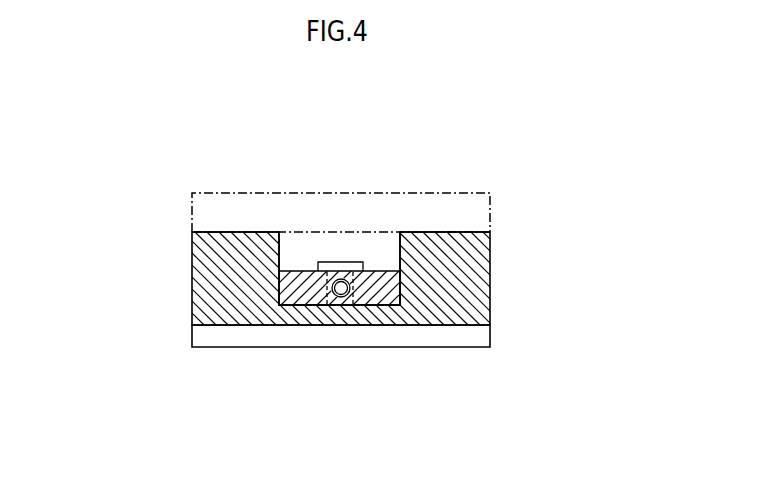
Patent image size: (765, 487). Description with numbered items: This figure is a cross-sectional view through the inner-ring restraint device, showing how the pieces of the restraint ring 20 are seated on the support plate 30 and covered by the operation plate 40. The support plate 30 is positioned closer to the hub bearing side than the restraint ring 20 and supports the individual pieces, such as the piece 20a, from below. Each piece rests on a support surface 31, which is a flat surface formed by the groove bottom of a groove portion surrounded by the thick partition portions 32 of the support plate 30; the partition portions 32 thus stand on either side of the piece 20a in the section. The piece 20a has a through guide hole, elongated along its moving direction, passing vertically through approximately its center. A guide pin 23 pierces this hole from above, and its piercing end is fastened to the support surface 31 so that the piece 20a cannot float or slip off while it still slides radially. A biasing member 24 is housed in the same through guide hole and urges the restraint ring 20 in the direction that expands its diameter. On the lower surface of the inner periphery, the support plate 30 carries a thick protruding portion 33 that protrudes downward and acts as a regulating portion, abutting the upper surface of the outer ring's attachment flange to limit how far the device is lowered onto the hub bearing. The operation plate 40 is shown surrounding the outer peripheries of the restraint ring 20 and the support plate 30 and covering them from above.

The restraint ring 20 is at (286, 288).
The piece 20a is at (204, 276).
The guide pin 23 is at (328, 254).
The biasing member 24 is at (343, 271).
The support plate 30 is at (192, 272).
The support surface 31 is at (372, 302).
The partition portion 32 is at (222, 237).
The protruding portion 33 is at (240, 347).
The operation plate 40 is at (492, 213).